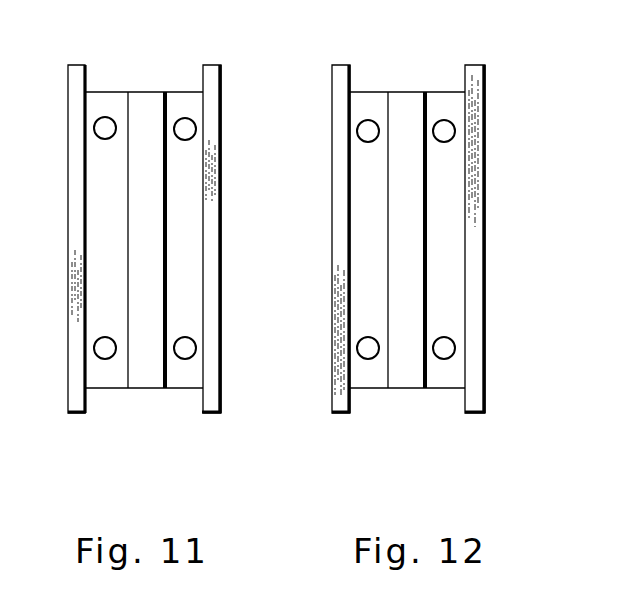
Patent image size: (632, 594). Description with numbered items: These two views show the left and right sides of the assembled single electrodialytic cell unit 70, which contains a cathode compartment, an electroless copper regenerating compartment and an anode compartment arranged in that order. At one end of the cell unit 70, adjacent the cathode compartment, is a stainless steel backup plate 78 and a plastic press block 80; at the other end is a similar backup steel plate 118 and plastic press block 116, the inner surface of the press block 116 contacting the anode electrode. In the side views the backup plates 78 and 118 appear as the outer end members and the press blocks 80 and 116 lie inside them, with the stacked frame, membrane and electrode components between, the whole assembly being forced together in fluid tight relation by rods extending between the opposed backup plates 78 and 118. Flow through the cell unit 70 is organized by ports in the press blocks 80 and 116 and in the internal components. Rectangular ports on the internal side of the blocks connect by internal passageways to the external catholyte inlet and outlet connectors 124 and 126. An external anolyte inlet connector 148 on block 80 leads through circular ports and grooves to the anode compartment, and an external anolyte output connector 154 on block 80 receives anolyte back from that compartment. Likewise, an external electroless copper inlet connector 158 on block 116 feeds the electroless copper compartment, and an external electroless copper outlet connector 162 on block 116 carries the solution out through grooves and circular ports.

In FIG. 11, the single electrodialytic cell unit 70 is at (146, 110).
In FIG. 12, the single electrodialytic cell unit 70 is at (405, 105).
In FIG. 11, the backup plate 78 is at (80, 228).
In FIG. 12, the backup plate 78 is at (473, 265).
In FIG. 11, the plastic press block 80 is at (108, 105).
In FIG. 12, the plastic press block 80 is at (440, 102).
In FIG. 11, the plastic press block 116 is at (183, 102).
In FIG. 12, the plastic press block 116 is at (378, 105).
In FIG. 11, the backup steel plate 118 is at (210, 218).
In FIG. 12, the backup steel plate 118 is at (338, 247).
In FIG. 12, the catholyte inlet connector 124 is at (455, 352).
In FIG. 12, the catholyte outlet connector 126 is at (357, 137).
In FIG. 11, the anolyte inlet connector 148 is at (94, 345).
In FIG. 11, the anolyte output connector 154 is at (94, 131).
In FIG. 11, the electroless copper inlet connector 158 is at (196, 345).
In FIG. 11, the electroless copper outlet connector 162 is at (196, 128).